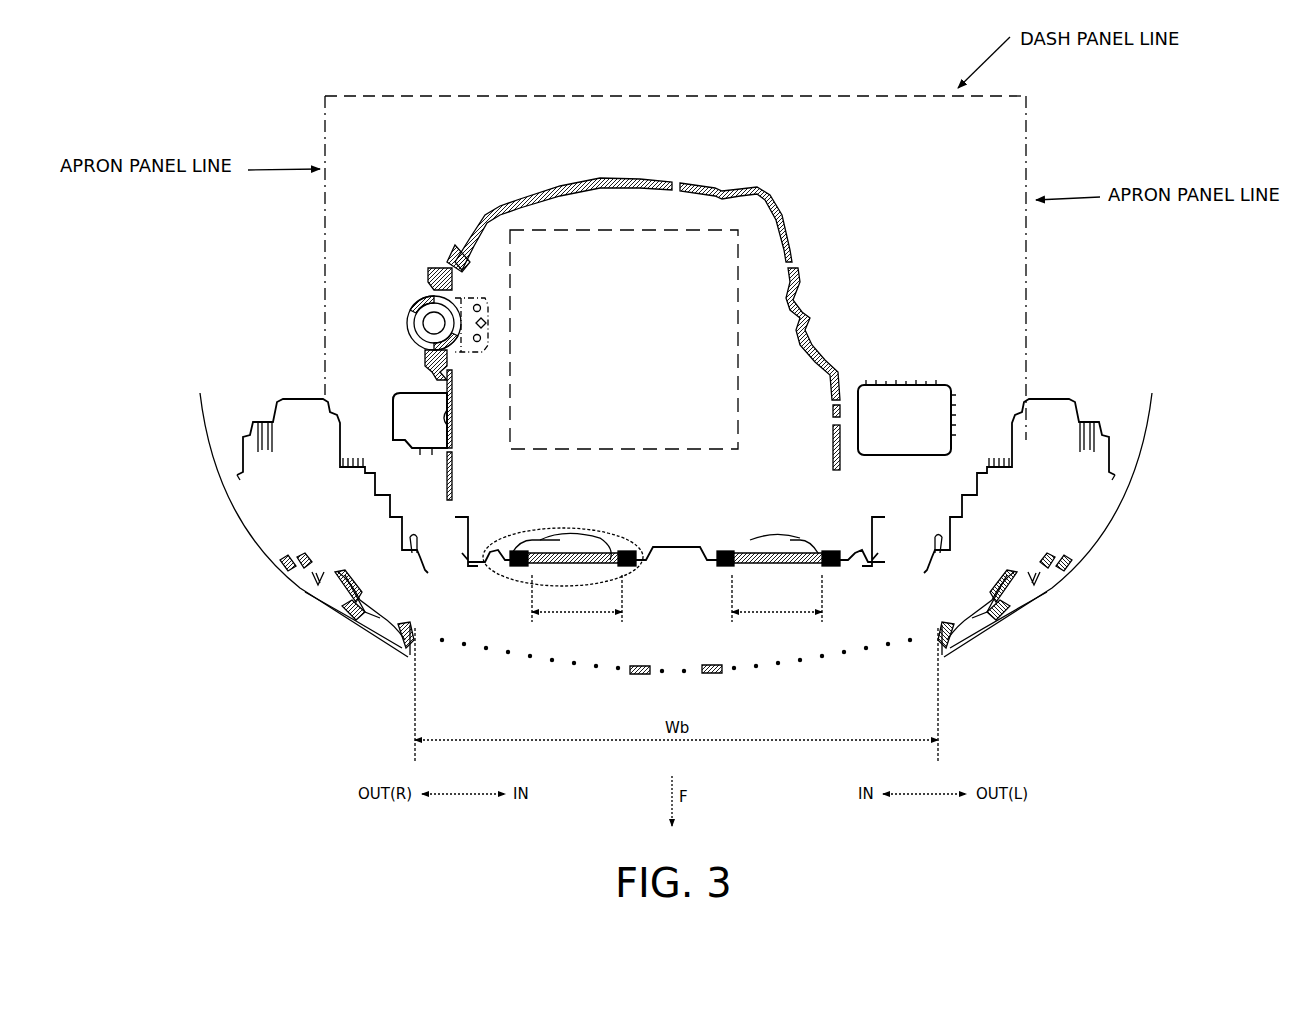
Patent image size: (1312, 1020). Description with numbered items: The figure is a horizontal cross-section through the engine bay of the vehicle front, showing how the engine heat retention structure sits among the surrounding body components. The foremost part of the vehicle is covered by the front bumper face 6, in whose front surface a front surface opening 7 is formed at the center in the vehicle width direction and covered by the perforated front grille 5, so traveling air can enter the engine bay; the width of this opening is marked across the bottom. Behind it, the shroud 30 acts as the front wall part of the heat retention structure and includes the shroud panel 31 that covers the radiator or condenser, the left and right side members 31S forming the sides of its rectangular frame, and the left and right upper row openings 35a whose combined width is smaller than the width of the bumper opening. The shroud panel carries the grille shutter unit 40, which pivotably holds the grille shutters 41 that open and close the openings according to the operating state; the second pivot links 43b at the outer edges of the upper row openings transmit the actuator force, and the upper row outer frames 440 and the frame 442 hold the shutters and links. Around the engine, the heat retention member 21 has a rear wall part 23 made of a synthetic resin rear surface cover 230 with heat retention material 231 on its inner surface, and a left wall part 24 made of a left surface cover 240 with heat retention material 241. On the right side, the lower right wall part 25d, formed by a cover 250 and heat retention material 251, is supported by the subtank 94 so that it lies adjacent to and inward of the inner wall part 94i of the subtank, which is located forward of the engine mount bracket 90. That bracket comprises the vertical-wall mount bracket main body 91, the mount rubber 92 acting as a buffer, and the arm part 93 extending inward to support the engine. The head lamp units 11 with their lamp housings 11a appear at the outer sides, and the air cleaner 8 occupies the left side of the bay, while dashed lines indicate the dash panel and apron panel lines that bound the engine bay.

The front grille 5 is at (588, 670).
The front bumper face 6 is at (332, 632).
The front surface opening 7 is at (835, 672).
The air cleaner 8 is at (952, 386).
The head lamp unit 11 is at (290, 394).
The lamp housing 11a is at (305, 398).
The heat retention member 21 is at (796, 190).
The rear wall part 23 is at (515, 202).
The rear surface cover 230 is at (555, 195).
The heat retention material 231 is at (580, 199).
The left wall part 24 is at (812, 292).
The left surface cover 240 is at (813, 337).
The heat retention material 241 is at (790, 358).
The lower right wall part 25d is at (462, 408).
The cover 250 is at (445, 482).
The heat retention material 251 is at (455, 478).
The shroud 30 is at (677, 519).
The shroud panel 31 is at (678, 545).
The side members 31S is at (466, 567).
The upper row openings 35a is at (592, 540).
The grille shutter unit 40 is at (678, 511).
The grille shutters 41 is at (568, 551).
The second pivot links 43b is at (545, 545).
The upper row outer frames 440 is at (516, 551).
The frame 442 is at (626, 551).
The engine mount bracket 90 is at (437, 312).
The mount bracket main body 91 is at (432, 272).
The mount rubber 92 is at (412, 348).
The arm part 93 is at (490, 308).
The subtank 94 is at (390, 393).
The inner wall part 94i is at (451, 427).